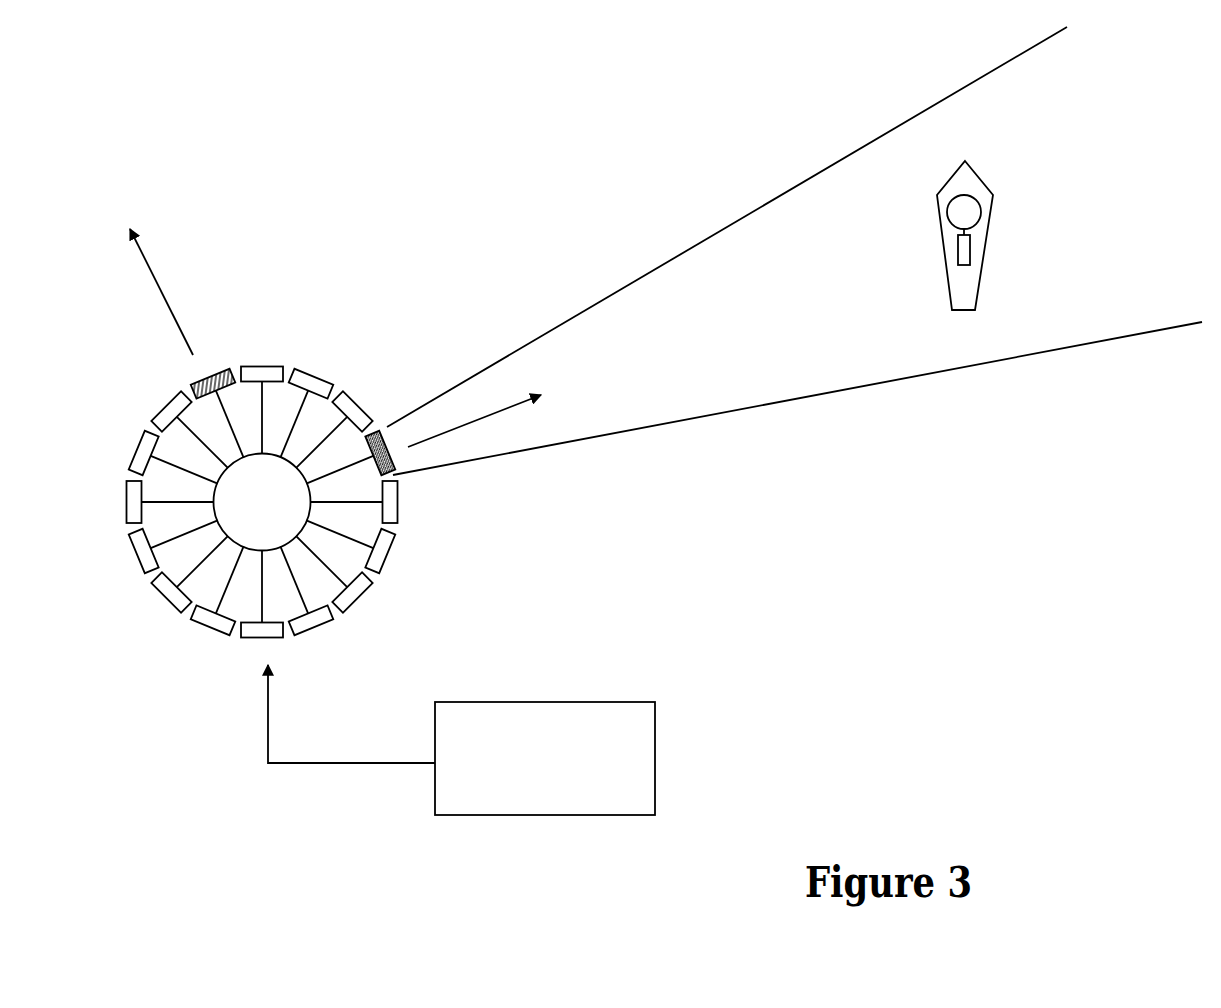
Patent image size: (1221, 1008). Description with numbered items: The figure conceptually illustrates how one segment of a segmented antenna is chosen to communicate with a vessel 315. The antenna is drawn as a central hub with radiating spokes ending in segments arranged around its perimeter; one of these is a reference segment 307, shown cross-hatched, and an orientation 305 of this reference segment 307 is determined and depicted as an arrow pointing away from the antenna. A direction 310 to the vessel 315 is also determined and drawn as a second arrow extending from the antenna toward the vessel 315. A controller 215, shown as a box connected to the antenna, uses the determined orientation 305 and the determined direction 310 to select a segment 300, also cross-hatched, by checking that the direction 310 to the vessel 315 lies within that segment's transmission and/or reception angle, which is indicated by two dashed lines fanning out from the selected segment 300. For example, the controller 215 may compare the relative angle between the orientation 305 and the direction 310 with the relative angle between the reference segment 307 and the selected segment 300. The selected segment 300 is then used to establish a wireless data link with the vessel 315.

The selected segment 300 is at (394, 467).
The orientation 305 is at (162, 298).
The reference segment 307 is at (193, 378).
The direction 310 is at (507, 408).
The vessel 315 is at (988, 230).
The controller 215 is at (461, 740).